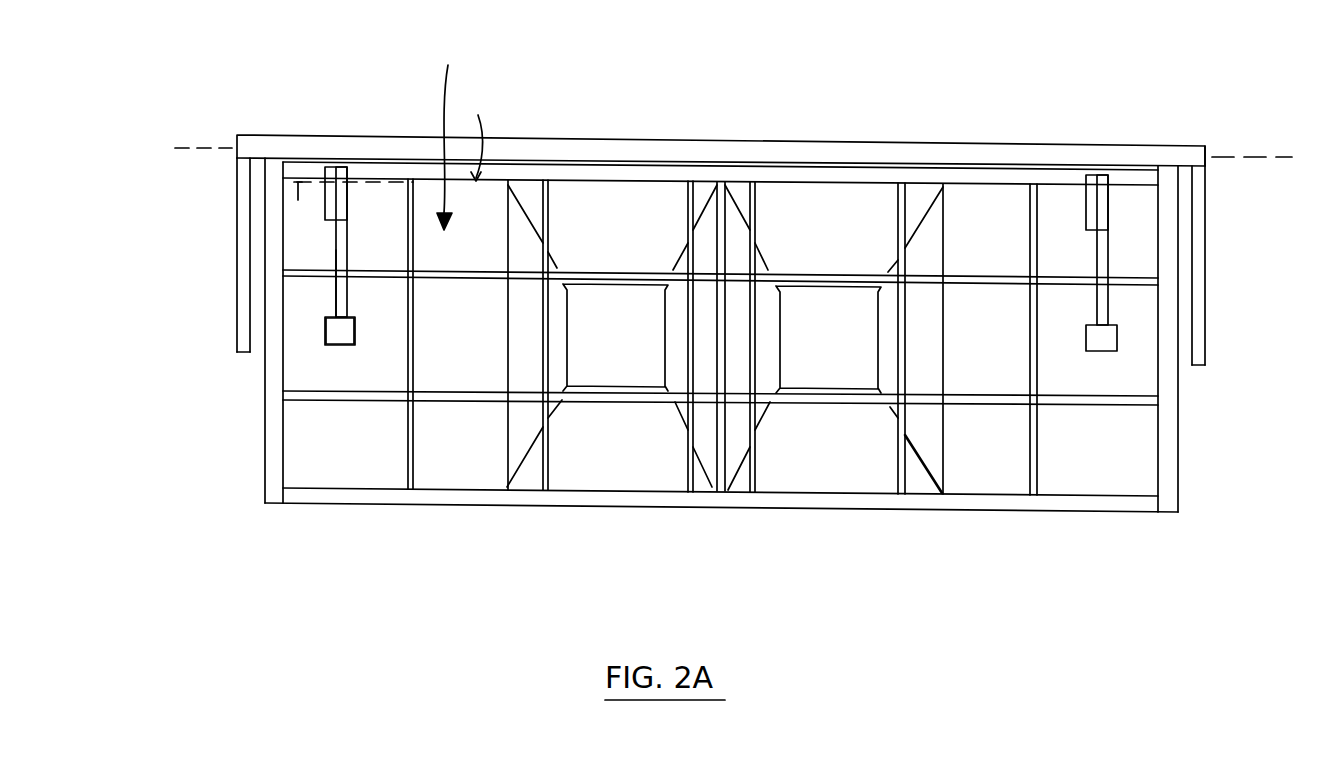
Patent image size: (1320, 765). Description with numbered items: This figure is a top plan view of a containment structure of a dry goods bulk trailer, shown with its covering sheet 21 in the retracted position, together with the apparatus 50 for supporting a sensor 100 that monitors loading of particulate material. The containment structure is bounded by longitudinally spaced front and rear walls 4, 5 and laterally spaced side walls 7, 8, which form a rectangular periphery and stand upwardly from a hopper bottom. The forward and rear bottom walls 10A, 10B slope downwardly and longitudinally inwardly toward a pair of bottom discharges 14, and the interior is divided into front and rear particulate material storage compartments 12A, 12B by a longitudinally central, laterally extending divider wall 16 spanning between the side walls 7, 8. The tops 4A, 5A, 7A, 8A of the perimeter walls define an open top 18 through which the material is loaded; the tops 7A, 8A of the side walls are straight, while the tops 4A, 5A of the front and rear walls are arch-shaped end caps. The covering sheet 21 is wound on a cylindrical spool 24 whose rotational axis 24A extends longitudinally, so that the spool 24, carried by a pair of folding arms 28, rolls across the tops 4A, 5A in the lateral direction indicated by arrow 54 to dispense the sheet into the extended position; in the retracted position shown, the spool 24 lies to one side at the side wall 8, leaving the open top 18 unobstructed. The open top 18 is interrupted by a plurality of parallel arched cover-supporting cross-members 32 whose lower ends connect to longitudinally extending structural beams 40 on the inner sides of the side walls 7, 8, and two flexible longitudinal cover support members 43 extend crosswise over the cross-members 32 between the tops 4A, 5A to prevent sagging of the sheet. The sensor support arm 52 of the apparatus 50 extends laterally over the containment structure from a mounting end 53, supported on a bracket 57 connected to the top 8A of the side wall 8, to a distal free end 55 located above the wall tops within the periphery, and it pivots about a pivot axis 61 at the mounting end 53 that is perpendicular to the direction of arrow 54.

The front wall 4 is at (238, 330).
The top of front wall 4A is at (270, 443).
The rear wall 5 is at (1211, 329).
The top of rear wall 5A is at (1170, 468).
The side wall 7 is at (1055, 515).
The top of side wall 7A is at (1082, 507).
The side wall 8 is at (1002, 170).
The top of side wall 8A is at (973, 175).
The forward bottom wall 10A is at (373, 460).
The rear bottom wall 10B is at (1000, 475).
The front particulate material storage compartment 12A is at (468, 470).
The rear particulate material storage compartment 12B is at (958, 470).
The bottom discharge 14 is at (607, 300).
The divider wall 16 is at (722, 482).
The open top 18 is at (473, 132).
The covering sheet 21 is at (721, 119).
The spool 24 is at (1108, 145).
The rotational axis of the spool 24A is at (1249, 152).
The folding arm 28 is at (1198, 258).
The arched cover-supporting cross-member 32 is at (415, 208).
The structural beam 40 is at (721, 334).
The longitudinal cover support member 43 is at (640, 268).
The apparatus 50 is at (715, 457).
The sensor support arm 52 is at (637, 192).
The mounting end 53 is at (357, 189).
The arrow 54 is at (452, 131).
The distal free end 55 is at (330, 308).
The bracket 57 is at (340, 168).
The pivot axis 61 is at (300, 200).
The sensor 100 is at (343, 360).